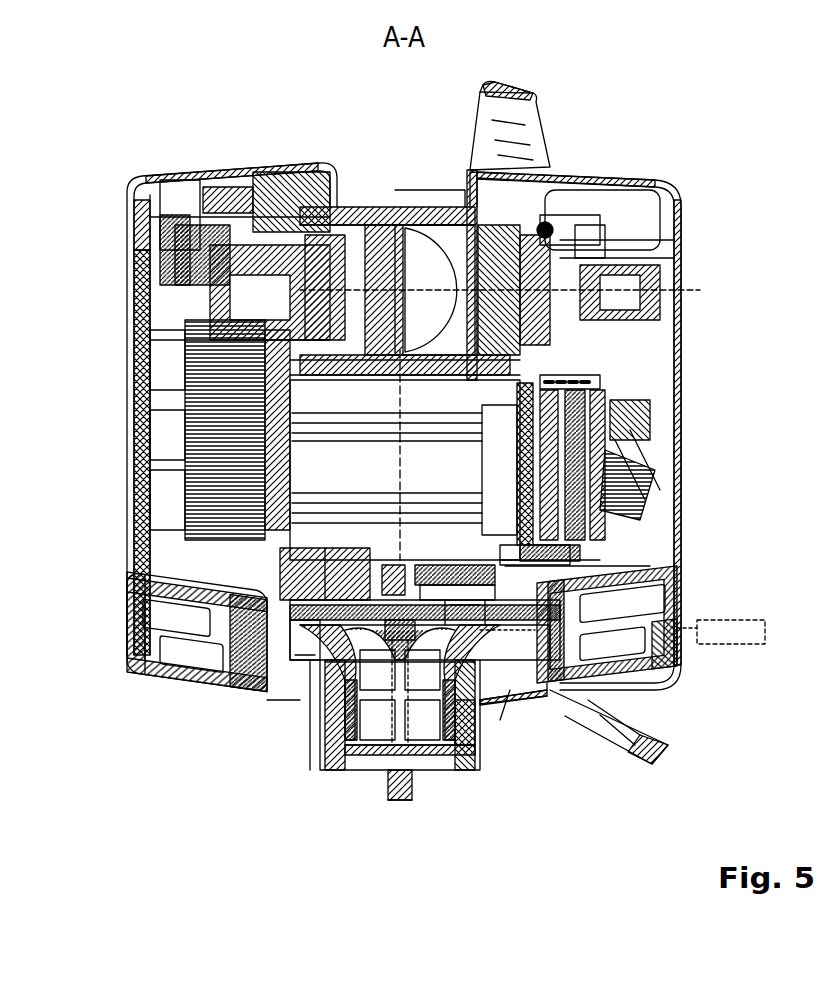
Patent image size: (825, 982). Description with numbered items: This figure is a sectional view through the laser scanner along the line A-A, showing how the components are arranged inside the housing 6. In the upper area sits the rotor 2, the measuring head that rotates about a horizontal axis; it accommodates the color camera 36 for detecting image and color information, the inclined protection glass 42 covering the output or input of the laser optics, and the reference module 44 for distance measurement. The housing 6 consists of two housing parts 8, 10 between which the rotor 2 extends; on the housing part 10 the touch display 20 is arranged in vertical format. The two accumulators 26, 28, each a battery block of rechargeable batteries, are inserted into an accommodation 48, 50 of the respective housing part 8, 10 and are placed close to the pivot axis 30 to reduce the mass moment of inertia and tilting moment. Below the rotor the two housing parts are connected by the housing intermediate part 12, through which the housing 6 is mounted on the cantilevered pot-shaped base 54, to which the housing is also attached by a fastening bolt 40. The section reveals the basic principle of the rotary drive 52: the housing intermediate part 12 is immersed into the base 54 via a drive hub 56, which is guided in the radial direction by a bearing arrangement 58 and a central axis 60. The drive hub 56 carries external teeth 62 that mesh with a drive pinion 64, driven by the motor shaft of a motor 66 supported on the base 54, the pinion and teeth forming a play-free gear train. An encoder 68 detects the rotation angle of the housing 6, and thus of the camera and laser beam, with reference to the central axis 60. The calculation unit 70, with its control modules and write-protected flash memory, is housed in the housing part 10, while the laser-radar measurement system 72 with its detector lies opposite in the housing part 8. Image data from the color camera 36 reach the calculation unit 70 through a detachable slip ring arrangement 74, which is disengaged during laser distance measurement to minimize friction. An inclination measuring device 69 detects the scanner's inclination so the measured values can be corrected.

The rotor 2 is at (352, 205).
The housing 6 is at (600, 138).
The housing part 8 is at (681, 245).
The housing part 10 is at (150, 177).
The housing intermediate part 12 is at (560, 557).
The touch display 20 is at (128, 362).
The accumulator 26 is at (682, 690).
The accumulator 28 is at (130, 665).
The pivot axis 30 is at (402, 466).
The color camera 36 is at (416, 207).
The fastening bolt 40 is at (648, 598).
The protection glass 42 is at (515, 383).
The reference module 44 is at (372, 400).
The accommodation 48 is at (273, 653).
The accommodation 50 is at (568, 630).
The rotary drive 52 is at (298, 755).
The pot-shaped base 54 is at (470, 720).
The drive hub 56 is at (365, 720).
The bearing arrangement 58 is at (335, 720).
The central axis 60 is at (420, 720).
The external teeth 62 is at (512, 690).
The drive pinion 64 is at (303, 605).
The motor 66 is at (286, 600).
The encoder 68 is at (732, 640).
The inclination measuring device 69 is at (558, 567).
The calculation unit 70 is at (185, 462).
The laser-radar measurement system 72 is at (618, 468).
The slip ring arrangement 74 is at (138, 268).